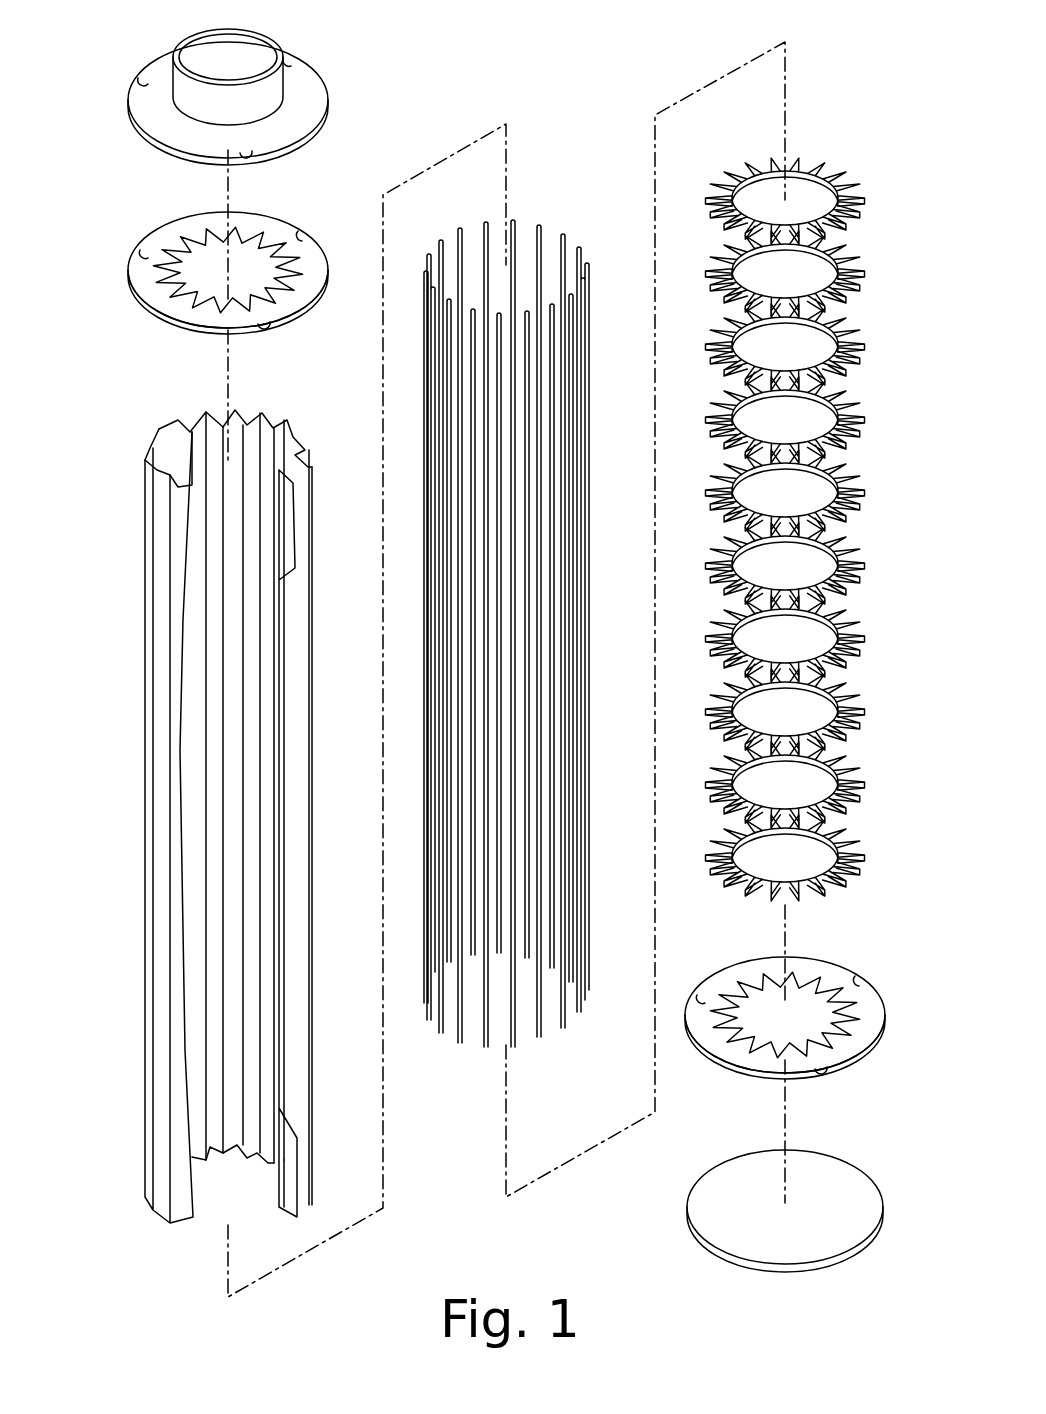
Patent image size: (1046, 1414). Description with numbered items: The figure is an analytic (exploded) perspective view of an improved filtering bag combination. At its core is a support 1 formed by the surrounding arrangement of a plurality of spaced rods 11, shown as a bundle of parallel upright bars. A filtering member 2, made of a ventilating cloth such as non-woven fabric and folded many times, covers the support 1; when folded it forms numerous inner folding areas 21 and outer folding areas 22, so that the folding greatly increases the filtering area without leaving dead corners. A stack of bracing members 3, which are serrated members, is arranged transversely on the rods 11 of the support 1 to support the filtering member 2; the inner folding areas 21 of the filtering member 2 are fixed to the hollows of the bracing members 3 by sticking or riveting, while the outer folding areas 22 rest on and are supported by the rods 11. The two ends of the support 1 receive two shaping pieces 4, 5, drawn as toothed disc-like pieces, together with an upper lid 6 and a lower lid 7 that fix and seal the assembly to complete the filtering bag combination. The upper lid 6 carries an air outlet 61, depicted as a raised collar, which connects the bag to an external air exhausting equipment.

The support 1 is at (513, 627).
The rods 11 is at (473, 1040).
The filtering member 2 is at (211, 782).
The inner folding areas 21 is at (200, 422).
The outer folding areas 22 is at (152, 447).
The bracing members 3 is at (818, 155).
The shaping piece 4 is at (150, 245).
The shaping piece 5 is at (812, 962).
The upper lid 6 is at (242, 93).
The air outlet 61 is at (245, 52).
The lower lid 7 is at (742, 1165).